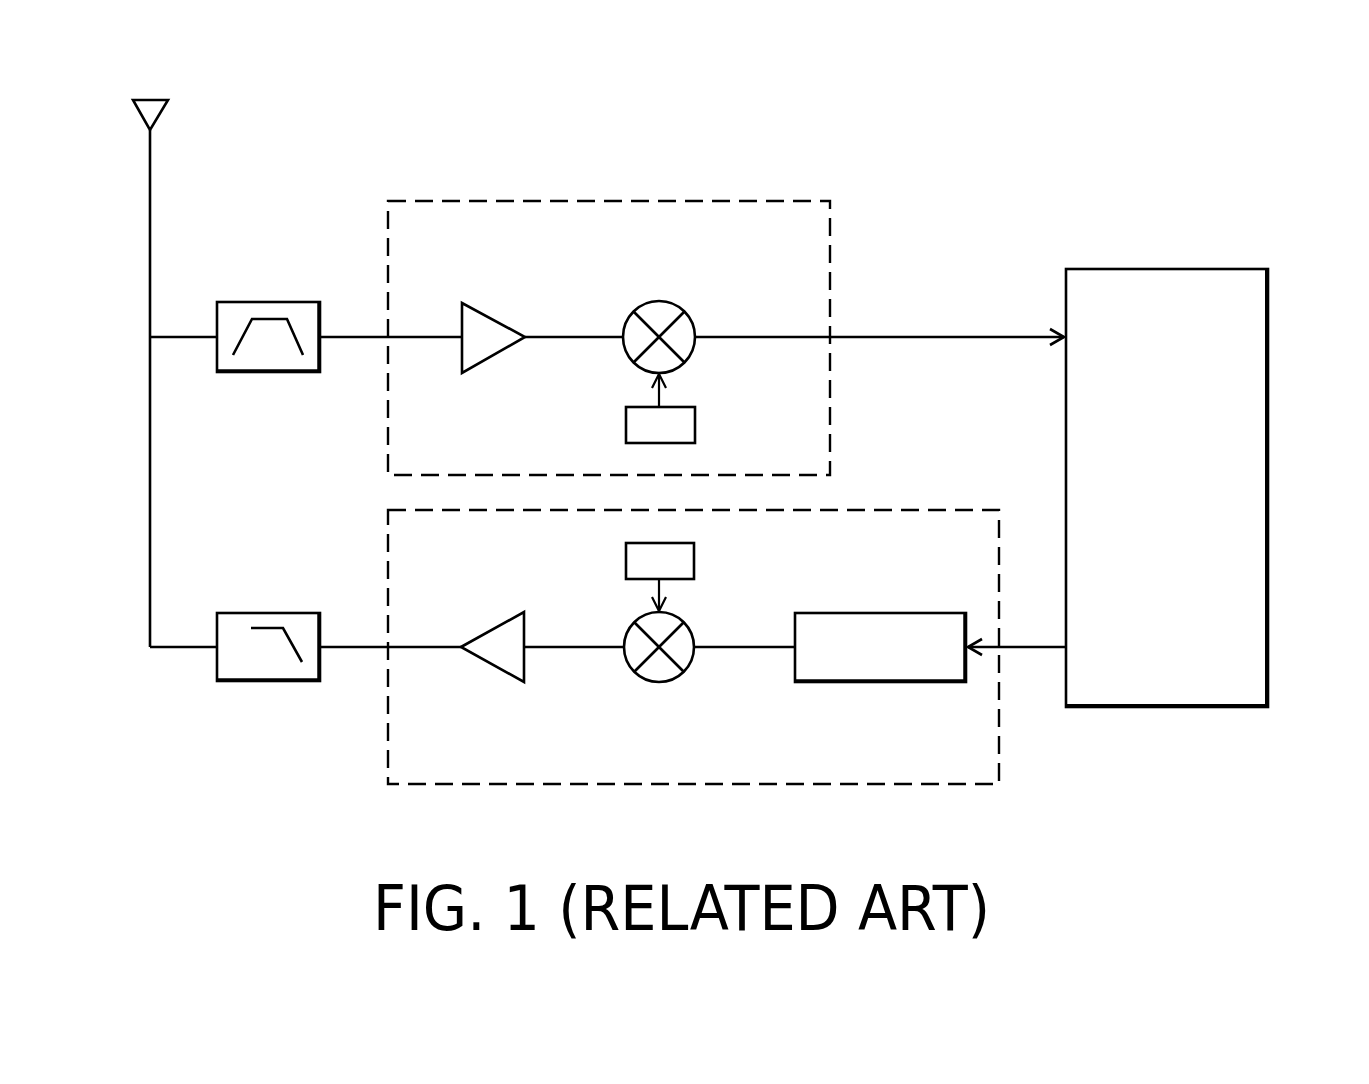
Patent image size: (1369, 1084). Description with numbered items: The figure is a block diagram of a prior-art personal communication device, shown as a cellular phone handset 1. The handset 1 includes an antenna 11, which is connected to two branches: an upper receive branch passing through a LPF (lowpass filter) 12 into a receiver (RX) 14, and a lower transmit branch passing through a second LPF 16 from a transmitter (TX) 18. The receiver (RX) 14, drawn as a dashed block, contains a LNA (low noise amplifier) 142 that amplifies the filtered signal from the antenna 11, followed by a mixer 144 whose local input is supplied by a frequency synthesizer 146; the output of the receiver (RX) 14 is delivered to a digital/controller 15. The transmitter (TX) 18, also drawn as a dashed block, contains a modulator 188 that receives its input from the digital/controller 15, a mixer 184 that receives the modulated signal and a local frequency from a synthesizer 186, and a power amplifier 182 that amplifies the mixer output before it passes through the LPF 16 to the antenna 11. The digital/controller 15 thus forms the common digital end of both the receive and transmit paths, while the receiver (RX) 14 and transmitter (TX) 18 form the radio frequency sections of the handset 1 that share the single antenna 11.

The handset 1 is at (966, 194).
The antenna 11 is at (133, 113).
The LPF (lowpass filter) 12 is at (268, 302).
The receiver (RX) 14 is at (608, 200).
The LNA (low noise amplifier) 142 is at (495, 303).
The mixer 144 is at (658, 301).
The frequency synthesizer 146 is at (695, 425).
The digital/controller 15 is at (1270, 491).
The LPF 16 is at (268, 683).
The transmitter (TX) 18 is at (915, 510).
The power amplifier 182 is at (490, 672).
The mixer 184 is at (659, 683).
The synthesizer 186 is at (694, 565).
The modulator 188 is at (880, 613).